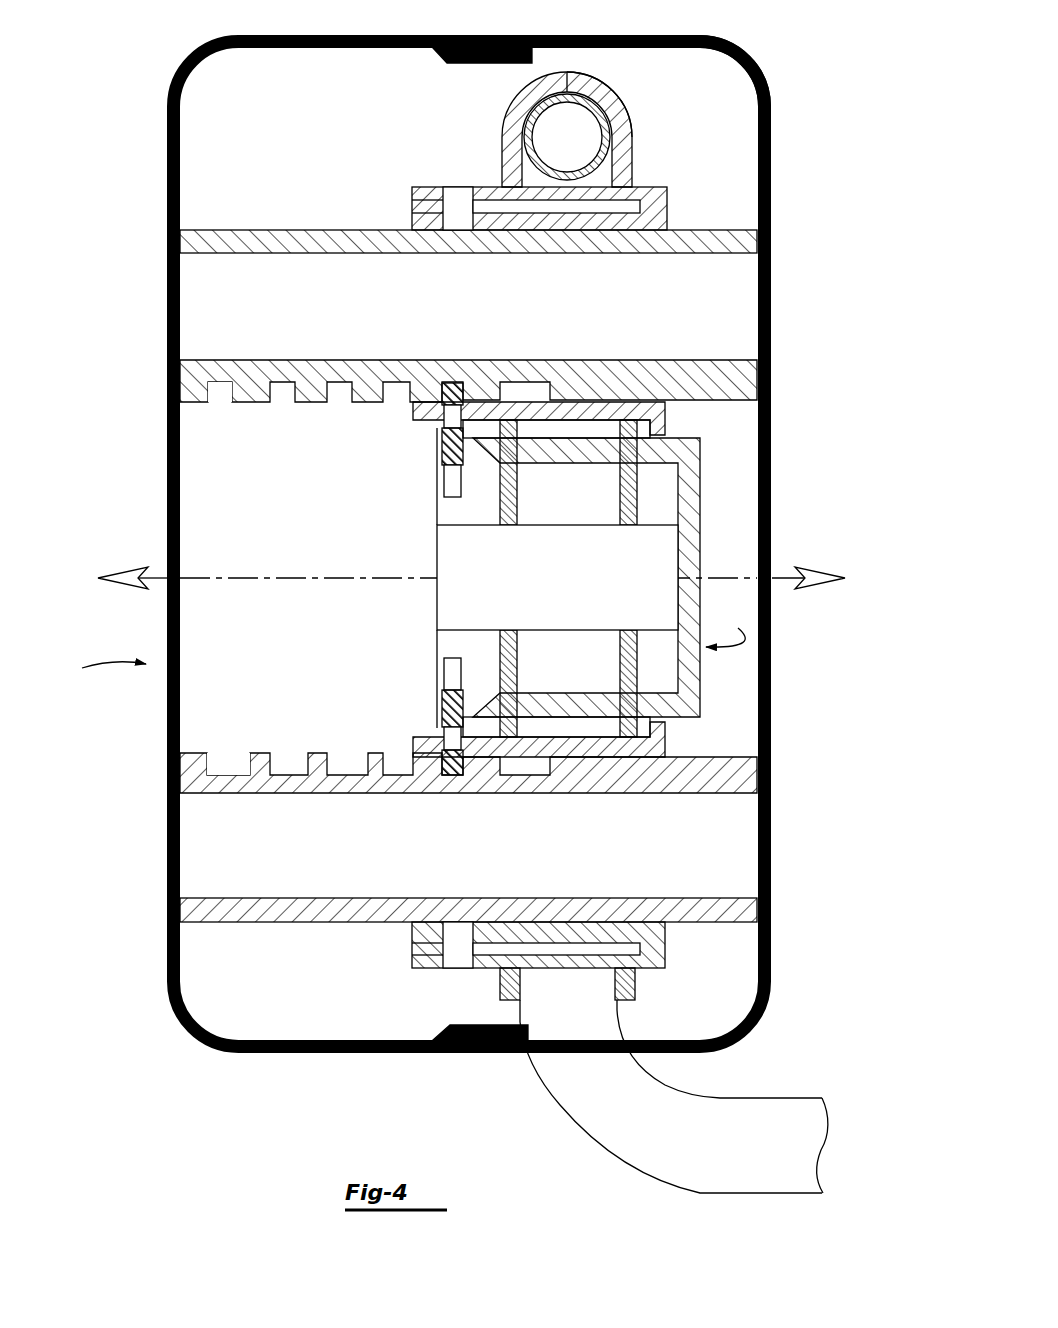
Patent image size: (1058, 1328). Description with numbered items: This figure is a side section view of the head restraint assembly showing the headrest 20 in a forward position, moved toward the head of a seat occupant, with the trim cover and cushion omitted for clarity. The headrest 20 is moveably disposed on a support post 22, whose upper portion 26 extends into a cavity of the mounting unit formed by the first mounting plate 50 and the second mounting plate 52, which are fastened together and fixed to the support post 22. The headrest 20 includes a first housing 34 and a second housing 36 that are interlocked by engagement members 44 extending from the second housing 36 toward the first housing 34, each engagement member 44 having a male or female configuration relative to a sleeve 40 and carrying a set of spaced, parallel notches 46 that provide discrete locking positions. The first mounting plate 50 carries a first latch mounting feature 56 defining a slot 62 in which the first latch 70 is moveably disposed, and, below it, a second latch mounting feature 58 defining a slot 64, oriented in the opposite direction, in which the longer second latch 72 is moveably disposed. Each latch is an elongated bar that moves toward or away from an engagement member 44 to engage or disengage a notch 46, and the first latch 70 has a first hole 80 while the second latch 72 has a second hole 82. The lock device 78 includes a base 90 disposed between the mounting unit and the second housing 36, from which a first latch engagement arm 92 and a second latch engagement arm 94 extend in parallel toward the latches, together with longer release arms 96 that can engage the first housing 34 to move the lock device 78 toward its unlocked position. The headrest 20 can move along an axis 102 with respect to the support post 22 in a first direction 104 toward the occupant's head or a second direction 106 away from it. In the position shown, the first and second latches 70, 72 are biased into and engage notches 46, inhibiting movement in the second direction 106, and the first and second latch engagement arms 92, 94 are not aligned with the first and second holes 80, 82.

The headrest 20 is at (98, 668).
The support post 22 is at (740, 1163).
The upper portion 26 is at (600, 110).
The first housing 34 is at (192, 62).
The second housing 36 is at (745, 52).
The sleeve 40 is at (667, 190).
The engagement member 44 is at (258, 253).
The notch 46 is at (400, 392).
The first mounting plate 50 is at (517, 97).
The second mounting plate 52 is at (616, 112).
The first latch mounting feature 56 is at (437, 505).
The second latch mounting feature 58 is at (437, 637).
The slot 62 is at (443, 480).
The slot 64 is at (443, 664).
The first latch 70 is at (443, 452).
The second latch 72 is at (443, 692).
The lock device 78 is at (725, 629).
The first hole 80 is at (443, 423).
The second hole 82 is at (443, 726).
The base 90 is at (700, 537).
The first latch engagement arm 92 is at (607, 463).
The second latch engagement arm 94 is at (607, 693).
The release arm 96 is at (572, 572).
The axis 102 is at (318, 580).
The first direction 104 is at (112, 578).
The second direction 106 is at (833, 578).